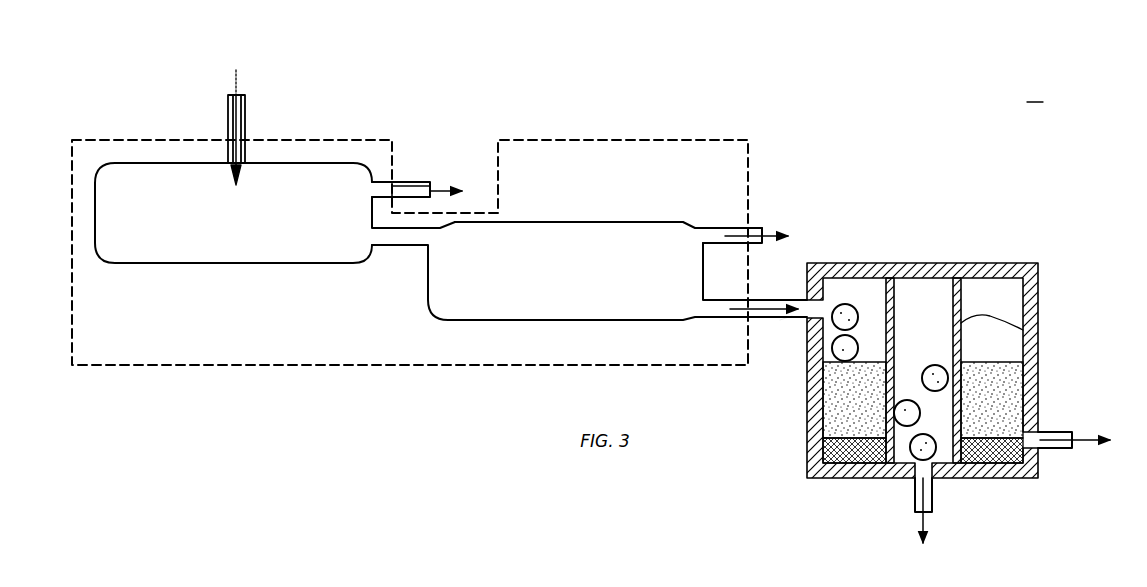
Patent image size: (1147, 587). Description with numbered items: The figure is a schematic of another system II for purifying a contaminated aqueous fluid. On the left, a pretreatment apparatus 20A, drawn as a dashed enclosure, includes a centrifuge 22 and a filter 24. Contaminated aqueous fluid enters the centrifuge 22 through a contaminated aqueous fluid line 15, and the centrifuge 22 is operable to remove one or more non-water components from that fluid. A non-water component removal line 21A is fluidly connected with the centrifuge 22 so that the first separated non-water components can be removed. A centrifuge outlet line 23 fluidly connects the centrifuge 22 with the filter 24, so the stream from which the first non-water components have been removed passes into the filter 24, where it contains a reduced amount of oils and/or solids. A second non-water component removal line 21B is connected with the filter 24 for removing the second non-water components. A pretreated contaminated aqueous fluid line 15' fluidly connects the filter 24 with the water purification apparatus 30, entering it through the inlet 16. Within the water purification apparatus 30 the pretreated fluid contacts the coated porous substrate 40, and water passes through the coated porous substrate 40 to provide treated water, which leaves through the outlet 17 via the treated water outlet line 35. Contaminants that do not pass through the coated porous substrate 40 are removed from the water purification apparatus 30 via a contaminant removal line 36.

The contaminated aqueous fluid line 15 is at (209, 127).
The pretreated contaminated aqueous fluid line 15' is at (775, 351).
The inlet 16 is at (820, 308).
The outlet 17 is at (935, 485).
The pretreatment apparatus 20A is at (394, 354).
The non-water component removal line 21A is at (435, 188).
The non-water component removal line 21B is at (770, 234).
The centrifuge 22 is at (224, 227).
The centrifuge outlet line 23 is at (403, 246).
The filter 24 is at (555, 284).
The water purification apparatus 30 is at (988, 235).
The treated water outlet line 35 is at (915, 508).
The contaminant removal line 36 is at (1088, 447).
The coated porous substrate 40 is at (1038, 331).
The system II is at (1035, 93).